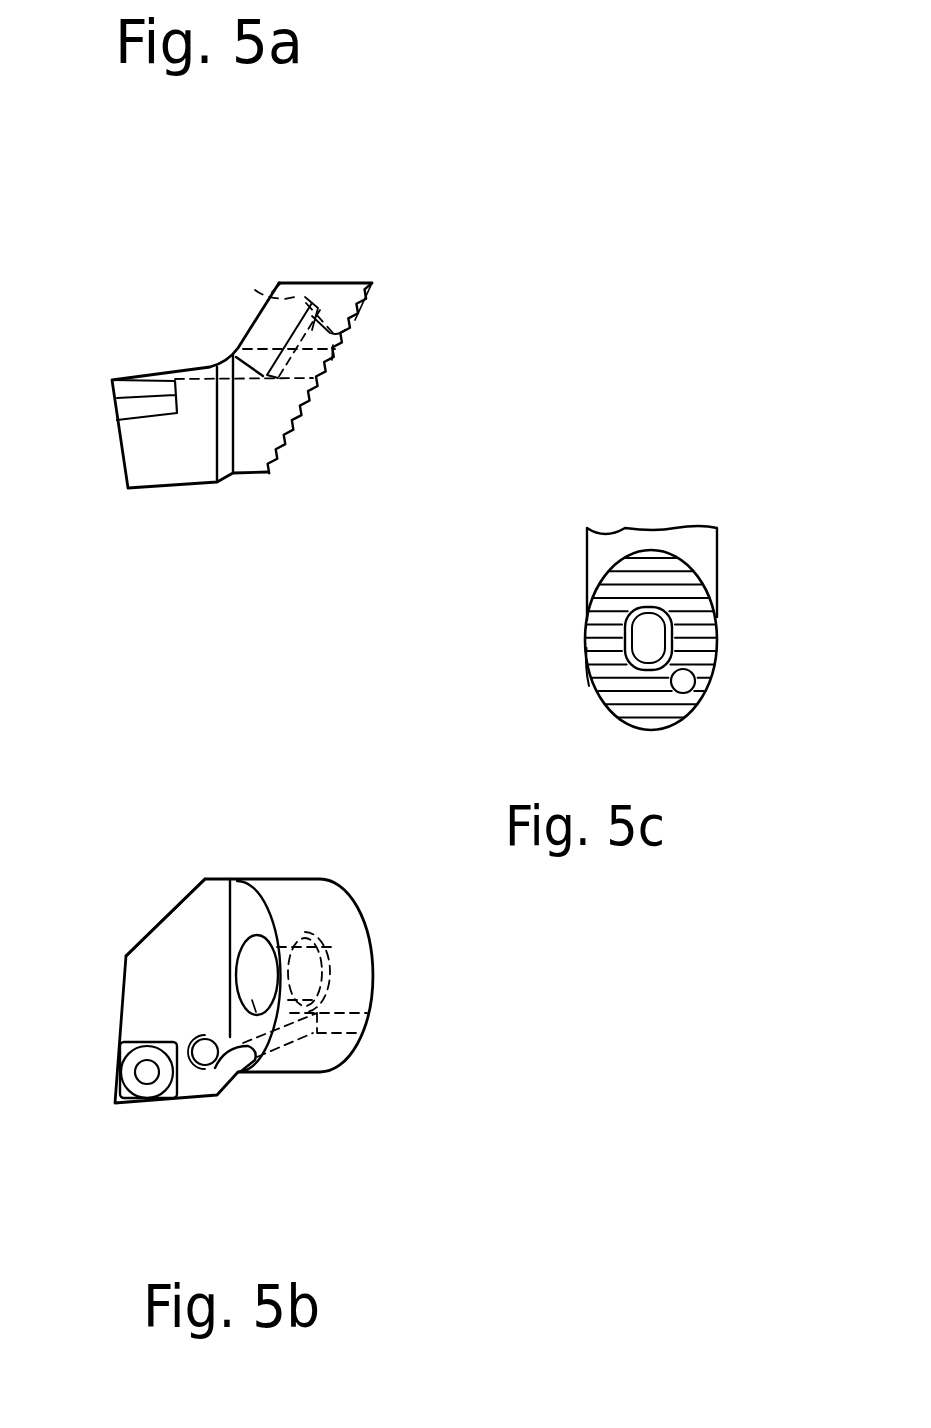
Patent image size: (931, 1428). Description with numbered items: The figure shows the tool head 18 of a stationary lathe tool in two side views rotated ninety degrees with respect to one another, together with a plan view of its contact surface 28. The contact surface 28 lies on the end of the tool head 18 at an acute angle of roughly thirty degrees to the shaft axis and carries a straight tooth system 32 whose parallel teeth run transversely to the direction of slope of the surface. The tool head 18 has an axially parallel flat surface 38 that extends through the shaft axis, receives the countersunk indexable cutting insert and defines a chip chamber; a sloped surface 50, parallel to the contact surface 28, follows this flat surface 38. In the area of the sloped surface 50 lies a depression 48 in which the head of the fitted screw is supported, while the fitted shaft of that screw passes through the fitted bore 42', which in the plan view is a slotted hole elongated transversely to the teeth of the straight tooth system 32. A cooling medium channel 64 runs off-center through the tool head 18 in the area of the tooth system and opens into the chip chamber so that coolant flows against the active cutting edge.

In FIG. 5A, the tool head 18 is at (182, 476).
In FIG. 5B, the tool head 18 is at (214, 914).
In FIG. 5A, the contact surface 28 is at (355, 320).
In FIG. 5C, the contact surface 28 is at (610, 603).
In FIG. 5A, the straight tooth system 32 is at (333, 345).
In FIG. 5C, the straight tooth system 32 is at (601, 686).
In FIG. 5A, the flat surface 38 is at (173, 378).
In FIG. 5B, the flat surface 38 is at (170, 977).
In FIG. 5A, the fitted bore 42' is at (326, 277).
In FIG. 5C, the fitted bore 42' is at (721, 607).
In FIG. 5B, the fitted bore 42' is at (346, 1045).
In FIG. 5A, the depression 48 is at (255, 290).
In FIG. 5B, the depression 48 is at (252, 1000).
In FIG. 5A, the sloped surface 50 is at (276, 283).
In FIG. 5B, the sloped surface 50 is at (247, 918).
In FIG. 5C, the cooling medium channel 64 is at (688, 688).